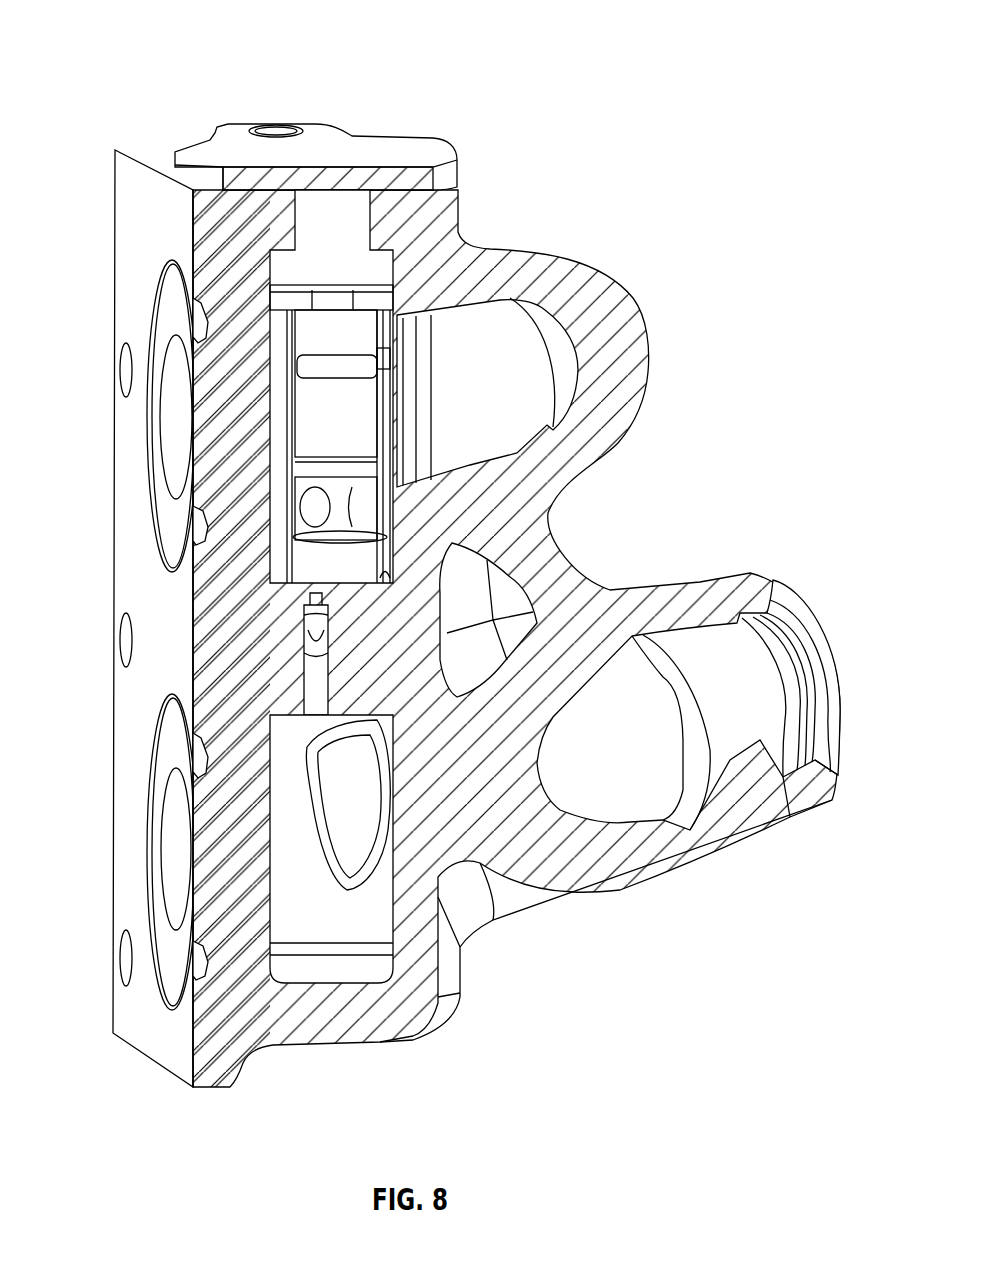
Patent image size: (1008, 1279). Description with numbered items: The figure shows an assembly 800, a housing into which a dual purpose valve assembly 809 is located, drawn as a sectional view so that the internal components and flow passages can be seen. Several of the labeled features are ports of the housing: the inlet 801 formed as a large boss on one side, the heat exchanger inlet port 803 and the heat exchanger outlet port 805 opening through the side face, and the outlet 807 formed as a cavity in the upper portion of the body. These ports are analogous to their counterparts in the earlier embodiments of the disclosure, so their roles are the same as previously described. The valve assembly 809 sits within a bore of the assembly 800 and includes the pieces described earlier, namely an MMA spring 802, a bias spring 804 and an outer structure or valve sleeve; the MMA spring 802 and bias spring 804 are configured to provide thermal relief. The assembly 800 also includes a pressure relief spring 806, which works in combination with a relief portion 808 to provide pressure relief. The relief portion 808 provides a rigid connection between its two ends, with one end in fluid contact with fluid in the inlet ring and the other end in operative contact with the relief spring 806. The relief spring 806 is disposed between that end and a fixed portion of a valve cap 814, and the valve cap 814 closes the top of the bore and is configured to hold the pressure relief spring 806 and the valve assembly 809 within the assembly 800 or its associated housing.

The assembly 800 is at (188, 40).
The inlet 801 is at (732, 790).
The MMA spring 802 is at (327, 405).
The heat exchanger inlet port 803 is at (175, 838).
The bias spring 804 is at (323, 323).
The heat exchanger outlet port 805 is at (172, 399).
The pressure relief spring 806 is at (362, 208).
The outlet 807 is at (470, 442).
The relief portion 808 is at (277, 527).
The dual purpose valve assembly 809 is at (347, 621).
The valve cap 814 is at (318, 140).